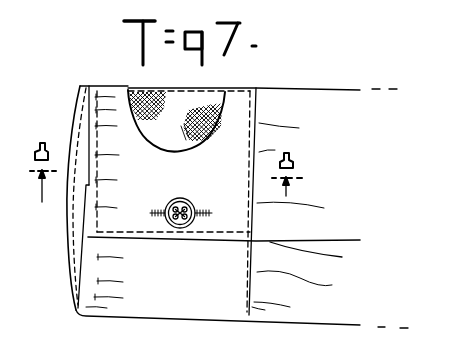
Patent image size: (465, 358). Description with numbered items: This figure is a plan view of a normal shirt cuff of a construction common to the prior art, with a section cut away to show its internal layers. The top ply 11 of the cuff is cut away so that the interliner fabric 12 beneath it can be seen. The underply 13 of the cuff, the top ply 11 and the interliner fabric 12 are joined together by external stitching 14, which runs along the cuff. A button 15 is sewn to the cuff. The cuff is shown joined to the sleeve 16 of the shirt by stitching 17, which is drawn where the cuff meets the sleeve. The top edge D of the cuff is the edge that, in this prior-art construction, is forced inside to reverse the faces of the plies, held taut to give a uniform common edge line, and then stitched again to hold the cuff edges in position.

The top ply 11 is at (235, 118).
The interliner fabric 12 is at (137, 101).
The underply 13 is at (78, 216).
The external stitching 14 is at (90, 267).
The button 15 is at (183, 198).
The sleeve 16 is at (257, 222).
The stitching 17 is at (257, 147).
The top edge D is at (72, 293).